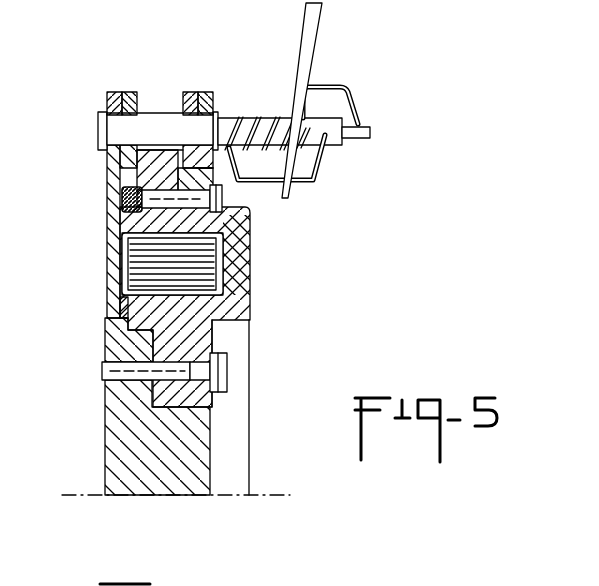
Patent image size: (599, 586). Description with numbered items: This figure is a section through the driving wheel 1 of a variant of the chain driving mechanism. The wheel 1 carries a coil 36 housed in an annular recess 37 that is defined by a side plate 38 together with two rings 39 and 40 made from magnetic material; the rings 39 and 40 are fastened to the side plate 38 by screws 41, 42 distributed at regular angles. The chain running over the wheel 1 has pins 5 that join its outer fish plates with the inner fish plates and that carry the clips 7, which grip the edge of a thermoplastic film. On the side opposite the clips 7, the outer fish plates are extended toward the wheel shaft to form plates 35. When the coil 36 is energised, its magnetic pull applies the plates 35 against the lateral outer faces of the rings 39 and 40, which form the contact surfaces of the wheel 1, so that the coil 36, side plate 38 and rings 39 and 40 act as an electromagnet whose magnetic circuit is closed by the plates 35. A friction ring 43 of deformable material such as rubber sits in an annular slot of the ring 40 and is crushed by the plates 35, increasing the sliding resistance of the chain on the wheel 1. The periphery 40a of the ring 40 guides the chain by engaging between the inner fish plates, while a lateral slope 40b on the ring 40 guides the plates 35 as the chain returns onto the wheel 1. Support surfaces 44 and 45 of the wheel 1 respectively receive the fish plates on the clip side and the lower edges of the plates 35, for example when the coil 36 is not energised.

The driving wheel 1 is at (98, 418).
The pins 5 is at (170, 130).
The clips 7 is at (333, 88).
The plates 35 is at (112, 245).
The coil 36 is at (225, 250).
The annular recess 37 is at (215, 275).
The side plate 38 is at (232, 308).
The ring 39 is at (160, 348).
The ring 40 is at (110, 158).
The periphery 40a is at (153, 150).
The slope 40b is at (118, 180).
The screws 41 is at (215, 203).
The screws 42 is at (215, 368).
The ring 43 is at (112, 200).
The support surface 44 is at (112, 318).
The support surface 45 is at (203, 165).